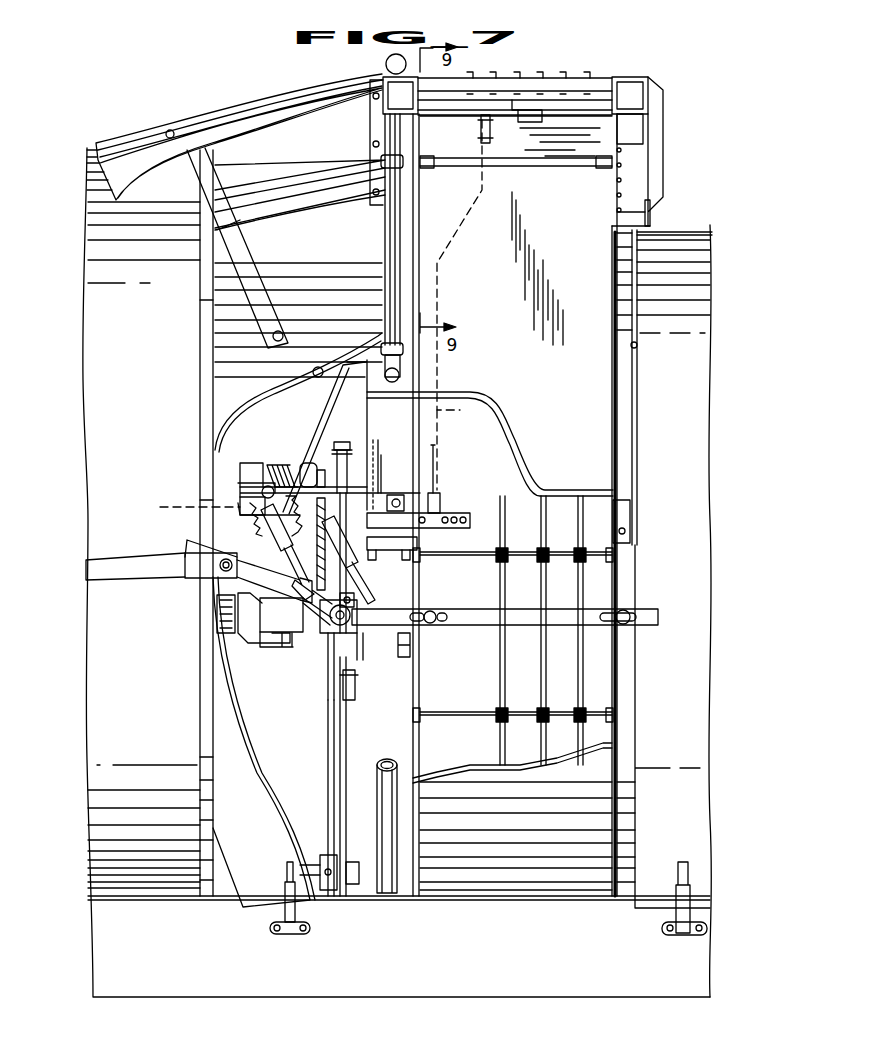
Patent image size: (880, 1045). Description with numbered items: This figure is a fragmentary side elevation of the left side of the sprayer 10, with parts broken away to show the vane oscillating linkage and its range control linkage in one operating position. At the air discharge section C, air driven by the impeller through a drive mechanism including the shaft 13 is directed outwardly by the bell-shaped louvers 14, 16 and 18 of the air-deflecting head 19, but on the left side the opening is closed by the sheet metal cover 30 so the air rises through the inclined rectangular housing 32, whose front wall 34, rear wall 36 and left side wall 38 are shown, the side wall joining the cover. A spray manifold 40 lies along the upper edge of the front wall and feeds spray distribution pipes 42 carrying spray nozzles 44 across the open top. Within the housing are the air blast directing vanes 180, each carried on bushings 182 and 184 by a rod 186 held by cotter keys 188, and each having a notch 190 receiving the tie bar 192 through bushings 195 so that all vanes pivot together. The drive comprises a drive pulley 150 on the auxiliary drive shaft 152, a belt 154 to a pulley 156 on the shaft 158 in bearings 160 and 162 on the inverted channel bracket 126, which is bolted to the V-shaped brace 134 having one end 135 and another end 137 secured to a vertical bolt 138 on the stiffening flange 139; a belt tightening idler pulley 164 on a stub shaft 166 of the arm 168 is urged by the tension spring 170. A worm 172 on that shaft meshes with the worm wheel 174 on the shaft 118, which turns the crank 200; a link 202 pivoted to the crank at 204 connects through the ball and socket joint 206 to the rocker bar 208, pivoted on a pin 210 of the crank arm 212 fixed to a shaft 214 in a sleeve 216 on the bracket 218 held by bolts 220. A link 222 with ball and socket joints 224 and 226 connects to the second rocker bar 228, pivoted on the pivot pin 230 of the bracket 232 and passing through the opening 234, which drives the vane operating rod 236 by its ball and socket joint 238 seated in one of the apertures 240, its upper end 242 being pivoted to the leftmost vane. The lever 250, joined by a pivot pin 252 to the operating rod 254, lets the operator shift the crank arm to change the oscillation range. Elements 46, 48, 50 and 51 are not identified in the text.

The sprayer 10 is at (690, 77).
The air discharge section C is at (504, 65).
The shaft 13 is at (218, 614).
The bell-shaped louver 14 is at (582, 690).
The bell-shaped louver 16 is at (541, 673).
The bell-shaped louver 18 is at (499, 673).
The air-deflecting head 19 is at (590, 672).
The sheet metal cover 30 is at (524, 810).
The rectangular housing 32 is at (578, 428).
The front wall 34 is at (421, 284).
The rear wall 36 is at (616, 395).
The left side wall 38 is at (521, 335).
The spray manifold 40 is at (386, 64).
The spray distribution pipes 42 is at (597, 103).
The spray nozzles 44 is at (495, 72).
The hydraulic cylinder 46 is at (387, 213).
The lower cylinder 48 is at (392, 762).
The boom 50 is at (198, 118).
The brace arm 51 is at (212, 208).
The shaft 118 is at (192, 508).
The inverted channel bracket 126 is at (240, 504).
The V-shaped brace 134 is at (330, 370).
The end of brace 135 is at (358, 358).
The other end of brace 137 is at (378, 445).
The vertical bolt 138 is at (381, 462).
The stiffening flange 139 is at (421, 558).
The drive pulley 150 is at (342, 830).
The auxiliary drive shaft 152 is at (326, 857).
The belt 154 is at (352, 436).
The pulley 156 is at (348, 442).
The shaft 158 is at (370, 432).
The bearing 160 is at (300, 462).
The bearing 162 is at (262, 470).
The belt tightening idler pulley 164 is at (330, 695).
The stub shaft 166 is at (357, 680).
The arm 168 is at (330, 660).
The tension spring 170 is at (320, 560).
The worm 172 is at (254, 484).
The worm wheel 174 is at (258, 522).
The air blast directing vanes 180 is at (437, 135).
The bushing 182 is at (434, 162).
The bushing 184 is at (604, 162).
The rod 186 is at (494, 162).
The cotter keys 188 is at (383, 152).
The notch 190 is at (518, 122).
The tie bar 192 is at (497, 100).
The bushings 195 is at (545, 105).
The crank 200 is at (272, 540).
The link 202 is at (286, 556).
The pivotal connection 204 is at (245, 488).
The ball and socket joint 206 is at (270, 620).
The rocker bar 208 is at (352, 617).
The pin 210 is at (352, 640).
The crank arm 212 is at (300, 645).
The shaft 214 is at (320, 650).
The sleeve 216 is at (328, 652).
The bracket 218 is at (656, 616).
The bolts 220 is at (434, 622).
The link 222 is at (358, 558).
The ball and socket joint 224 is at (356, 599).
The ball and socket joint 226 is at (282, 470).
The second rocker bar 228 is at (445, 516).
The pivot pin 230 is at (398, 495).
The bracket 232 is at (432, 493).
The opening 234 is at (420, 545).
The vane operating rod 236 is at (441, 310).
The ball and socket joint 238 is at (441, 500).
The apertures 240 is at (458, 517).
The upper end of operating rod 242 is at (478, 138).
The lever 250 is at (193, 552).
The pivot pin 252 is at (222, 570).
The operating rod 254 is at (123, 580).